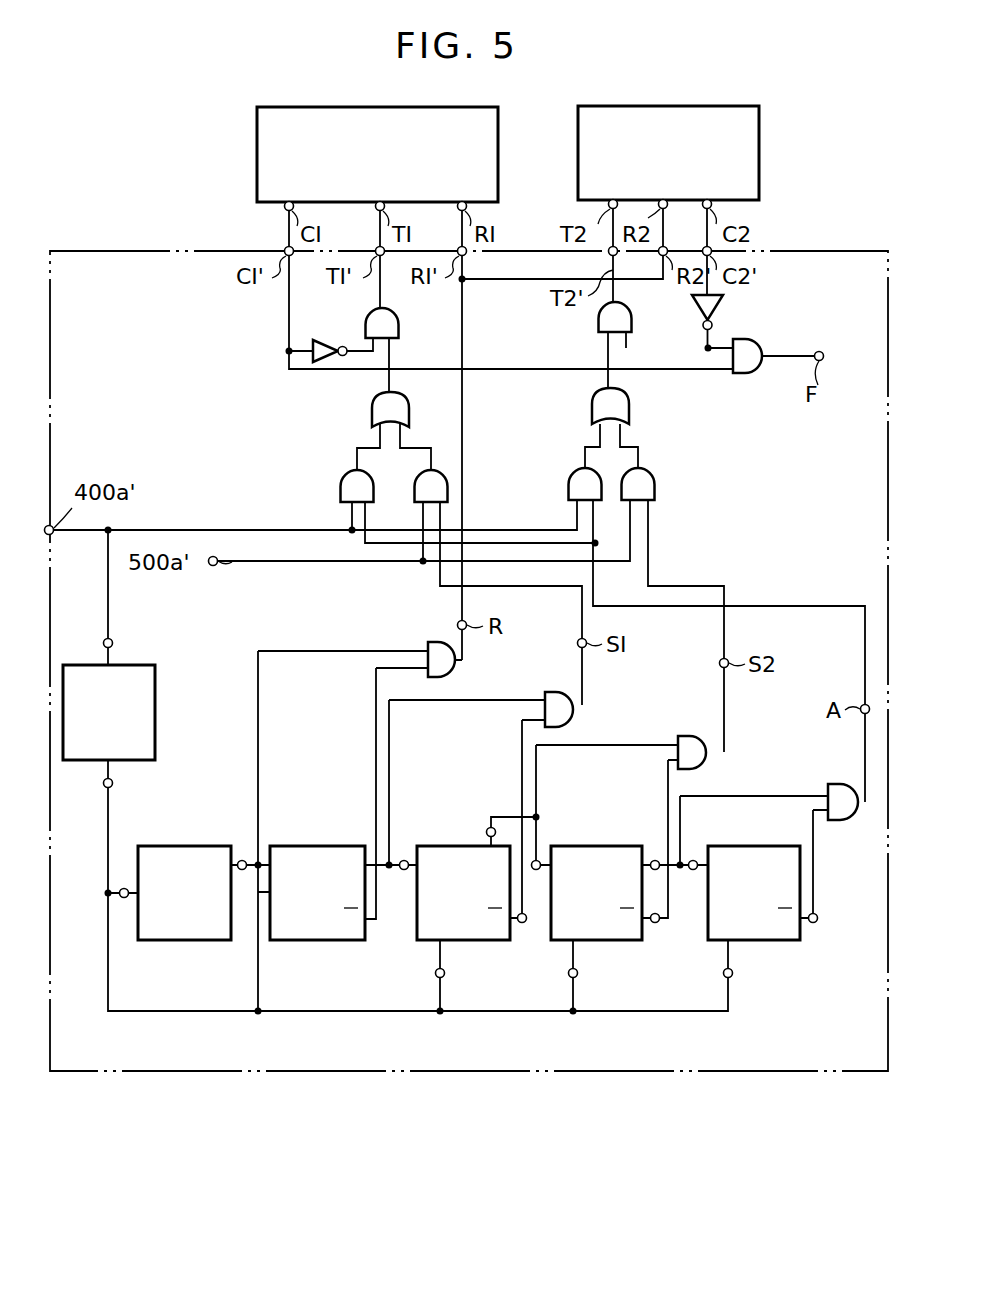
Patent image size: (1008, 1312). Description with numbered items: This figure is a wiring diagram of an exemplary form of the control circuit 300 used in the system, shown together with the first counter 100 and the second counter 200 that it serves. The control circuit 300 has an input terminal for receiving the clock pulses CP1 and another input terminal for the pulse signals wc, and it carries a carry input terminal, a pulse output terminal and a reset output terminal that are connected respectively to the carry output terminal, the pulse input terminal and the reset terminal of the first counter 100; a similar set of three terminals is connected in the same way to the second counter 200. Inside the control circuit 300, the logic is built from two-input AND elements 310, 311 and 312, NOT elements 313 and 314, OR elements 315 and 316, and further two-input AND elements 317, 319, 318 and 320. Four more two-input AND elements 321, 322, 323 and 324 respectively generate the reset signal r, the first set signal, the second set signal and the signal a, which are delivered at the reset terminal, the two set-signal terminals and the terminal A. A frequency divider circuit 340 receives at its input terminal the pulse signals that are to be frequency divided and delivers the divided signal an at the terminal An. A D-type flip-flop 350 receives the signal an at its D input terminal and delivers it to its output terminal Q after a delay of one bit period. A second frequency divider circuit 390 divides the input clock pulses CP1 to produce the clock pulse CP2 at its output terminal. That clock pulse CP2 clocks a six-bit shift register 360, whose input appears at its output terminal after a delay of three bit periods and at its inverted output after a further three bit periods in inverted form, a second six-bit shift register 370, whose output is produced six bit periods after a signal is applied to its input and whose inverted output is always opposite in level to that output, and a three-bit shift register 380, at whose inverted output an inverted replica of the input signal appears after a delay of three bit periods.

The first counter 100 is at (257, 158).
The second counter 200 is at (759, 157).
The control circuit 300 is at (470, 1071).
The two-input AND element 310 is at (744, 373).
The two-input AND element 311 is at (398, 325).
The two-input AND element 312 is at (598, 325).
The NOT element 313 is at (326, 339).
The NOT element 314 is at (722, 308).
The OR element 315 is at (366, 410).
The OR element 316 is at (592, 405).
The two-input AND element 317 is at (342, 492).
The two-input AND element 318 is at (569, 489).
The two-input AND element 319 is at (447, 490).
The two-input AND element 320 is at (655, 489).
The two-input AND element 321 is at (428, 648).
The two-input AND element 322 is at (552, 693).
The two-input AND element 323 is at (684, 737).
The two-input AND element 324 is at (840, 820).
The frequency divider circuit 340 is at (178, 940).
The D-type flip-flop 350 is at (322, 846).
The 6-bit shift register 360 is at (468, 846).
The 6-bit shift register 370 is at (612, 846).
The 3-bit shift register 380 is at (775, 846).
The frequency divider circuit 390 is at (155, 712).